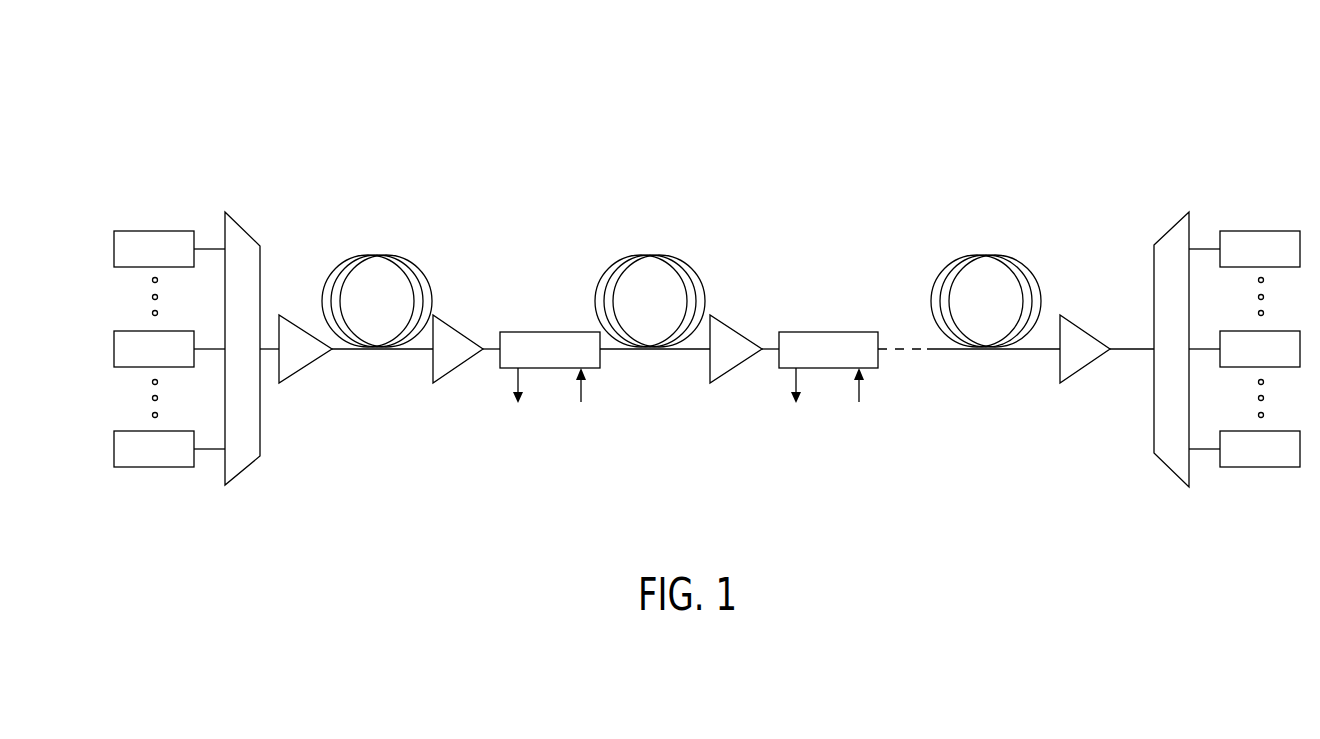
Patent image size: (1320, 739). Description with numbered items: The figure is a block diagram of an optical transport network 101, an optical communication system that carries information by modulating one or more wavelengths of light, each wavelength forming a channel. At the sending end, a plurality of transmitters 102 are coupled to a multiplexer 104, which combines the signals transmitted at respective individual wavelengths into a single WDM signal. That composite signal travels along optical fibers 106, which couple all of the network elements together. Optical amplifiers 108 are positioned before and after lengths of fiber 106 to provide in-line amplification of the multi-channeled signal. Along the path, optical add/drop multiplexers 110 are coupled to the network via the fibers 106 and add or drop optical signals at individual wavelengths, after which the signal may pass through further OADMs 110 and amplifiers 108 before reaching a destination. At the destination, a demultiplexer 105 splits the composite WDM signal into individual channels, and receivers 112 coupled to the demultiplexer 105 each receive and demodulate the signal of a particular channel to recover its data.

The optical transport network 101 is at (183, 67).
The transmitter 102 is at (142, 230).
The multiplexer 104 is at (243, 226).
The demultiplexer 105 is at (1177, 223).
The optical fiber 106 is at (368, 255).
The optical amplifier 108 is at (298, 370).
The optical add/drop multiplexer 110 is at (539, 332).
The receiver 112 is at (1277, 230).